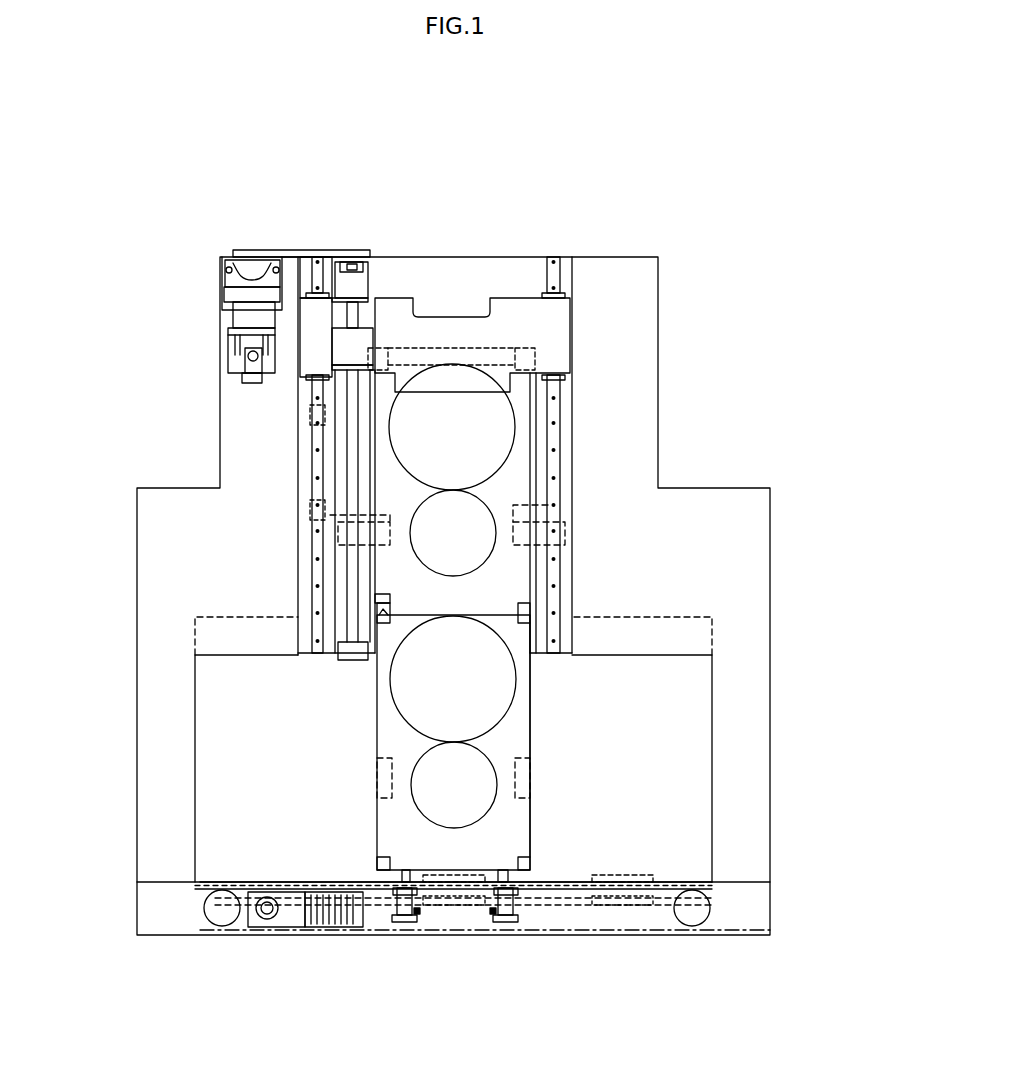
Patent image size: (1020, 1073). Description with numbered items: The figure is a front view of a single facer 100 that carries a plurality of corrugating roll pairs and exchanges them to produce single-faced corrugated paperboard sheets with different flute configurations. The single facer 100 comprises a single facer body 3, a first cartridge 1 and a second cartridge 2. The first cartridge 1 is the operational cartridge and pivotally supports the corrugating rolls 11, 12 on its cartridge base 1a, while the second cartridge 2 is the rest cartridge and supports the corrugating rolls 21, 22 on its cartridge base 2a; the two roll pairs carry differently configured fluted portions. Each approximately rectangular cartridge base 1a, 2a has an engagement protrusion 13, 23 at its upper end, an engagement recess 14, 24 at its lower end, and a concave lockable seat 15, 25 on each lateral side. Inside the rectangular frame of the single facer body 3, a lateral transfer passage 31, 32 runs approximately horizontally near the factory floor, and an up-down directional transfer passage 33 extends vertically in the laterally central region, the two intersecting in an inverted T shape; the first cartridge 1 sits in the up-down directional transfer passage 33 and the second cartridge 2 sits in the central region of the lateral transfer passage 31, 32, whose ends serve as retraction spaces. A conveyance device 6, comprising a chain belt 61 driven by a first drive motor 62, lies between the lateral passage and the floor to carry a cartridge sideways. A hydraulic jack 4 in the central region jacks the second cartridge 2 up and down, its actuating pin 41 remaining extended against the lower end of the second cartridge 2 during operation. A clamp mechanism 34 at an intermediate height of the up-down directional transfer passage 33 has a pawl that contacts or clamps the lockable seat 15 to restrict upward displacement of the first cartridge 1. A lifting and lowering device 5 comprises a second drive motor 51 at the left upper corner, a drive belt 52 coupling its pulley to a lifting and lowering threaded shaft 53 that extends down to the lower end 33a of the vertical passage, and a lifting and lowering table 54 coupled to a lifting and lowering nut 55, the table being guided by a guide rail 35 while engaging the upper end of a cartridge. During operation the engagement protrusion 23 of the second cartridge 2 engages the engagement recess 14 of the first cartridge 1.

The single facer 100 is at (538, 127).
The first cartridge 1 is at (532, 416).
The cartridge base 1a is at (533, 494).
The corrugating roll 11 is at (503, 437).
The corrugating roll 12 is at (472, 505).
The engagement protrusion 13 is at (312, 415).
The engagement recess 14 is at (380, 598).
The lockable seat 15 is at (318, 510).
The second cartridge 2 is at (542, 734).
The cartridge base 2a is at (532, 750).
The corrugating roll 21 is at (500, 687).
The corrugating roll 22 is at (475, 812).
The engagement protrusion 23 is at (375, 665).
The engagement recess 24 is at (378, 850).
The lockable seat 25 is at (387, 798).
The single facer body 3 is at (776, 510).
The lateral transfer passage 31 is at (196, 740).
The lateral transfer passage 32 is at (700, 728).
The up-down directional transfer passage 33 is at (565, 600).
The lower end of the up-down directional transfer passage 33a is at (293, 667).
The clamp mechanism 34 is at (338, 540).
The guide rail 35 is at (566, 257).
The hydraulic jack 4 is at (402, 930).
The actuating pin 41 is at (398, 872).
The lifting and lowering device 5 is at (248, 242).
The second drive motor 51 is at (238, 317).
The drive belt 52 is at (317, 250).
The lifting and lowering threaded shaft 53 is at (365, 312).
The lifting and lowering table 54 is at (460, 330).
The lifting and lowering nut 55 is at (375, 340).
The conveyance device 6 is at (296, 874).
The chain belt 61 is at (265, 882).
The first drive motor 62 is at (285, 916).